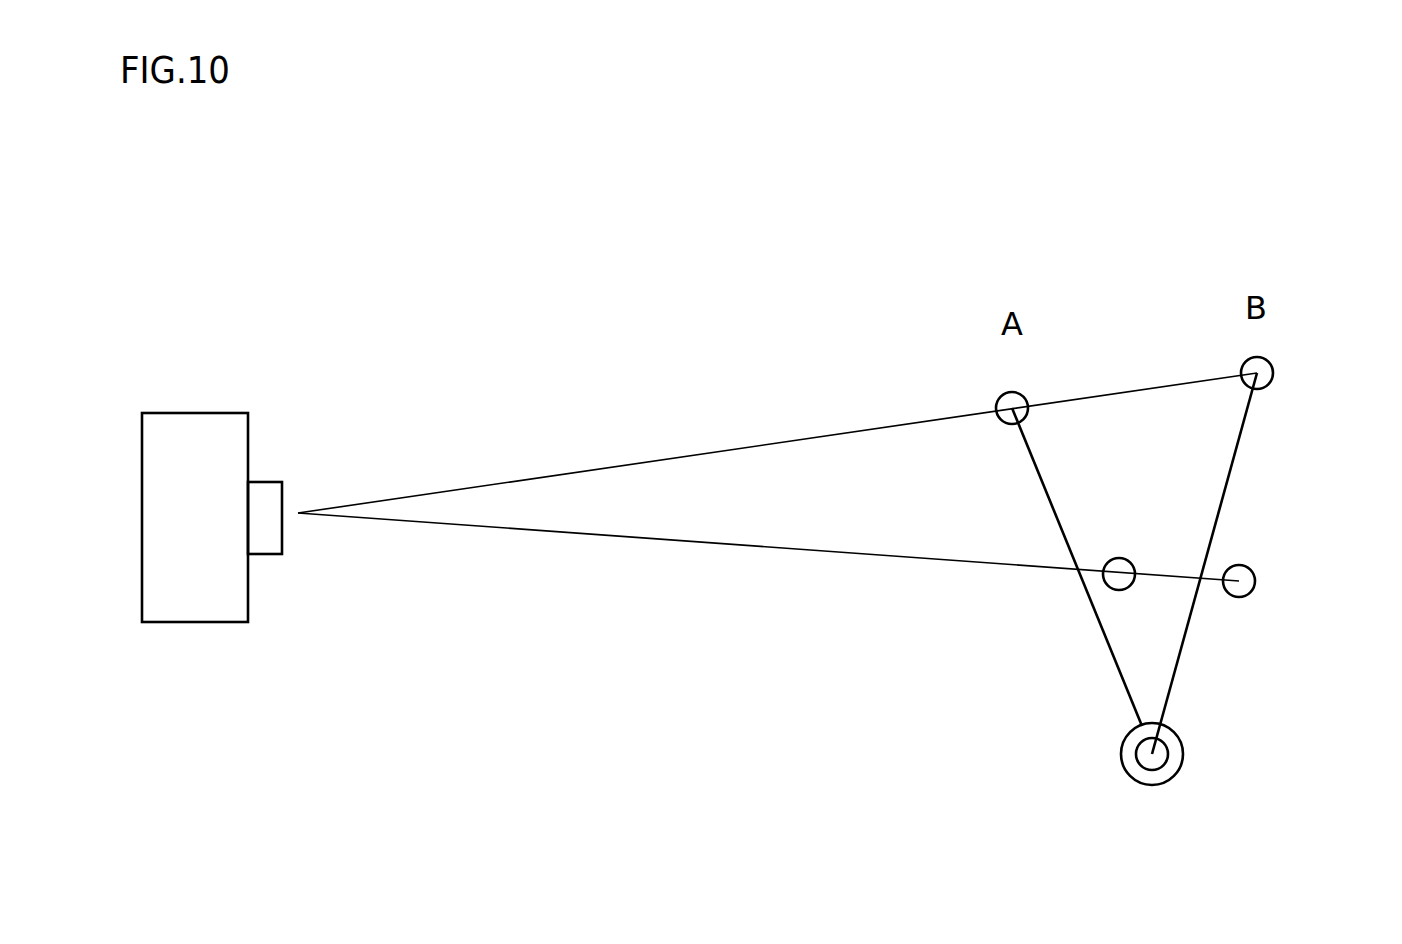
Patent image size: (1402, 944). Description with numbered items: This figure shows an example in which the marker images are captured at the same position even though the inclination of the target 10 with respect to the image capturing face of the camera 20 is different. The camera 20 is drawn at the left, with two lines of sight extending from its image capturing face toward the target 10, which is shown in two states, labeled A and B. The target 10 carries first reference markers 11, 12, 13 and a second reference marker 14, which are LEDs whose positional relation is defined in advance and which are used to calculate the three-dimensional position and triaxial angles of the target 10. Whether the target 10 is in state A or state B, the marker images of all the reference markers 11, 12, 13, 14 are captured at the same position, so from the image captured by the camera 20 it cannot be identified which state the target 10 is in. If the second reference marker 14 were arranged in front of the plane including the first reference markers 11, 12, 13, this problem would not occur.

The target 10 is at (1260, 506).
The first reference marker 11 is at (994, 401).
The first reference marker 12 is at (1185, 752).
The first reference marker 13 is at (1158, 786).
The second reference marker 14 is at (1128, 560).
The camera 20 is at (210, 413).